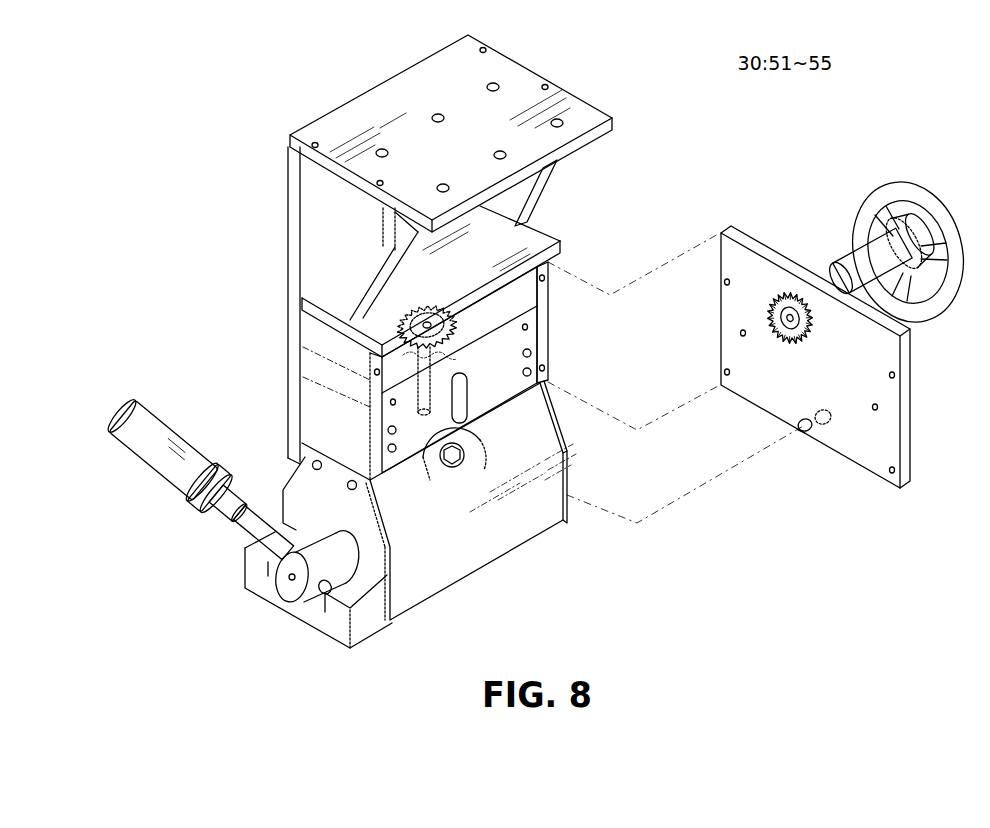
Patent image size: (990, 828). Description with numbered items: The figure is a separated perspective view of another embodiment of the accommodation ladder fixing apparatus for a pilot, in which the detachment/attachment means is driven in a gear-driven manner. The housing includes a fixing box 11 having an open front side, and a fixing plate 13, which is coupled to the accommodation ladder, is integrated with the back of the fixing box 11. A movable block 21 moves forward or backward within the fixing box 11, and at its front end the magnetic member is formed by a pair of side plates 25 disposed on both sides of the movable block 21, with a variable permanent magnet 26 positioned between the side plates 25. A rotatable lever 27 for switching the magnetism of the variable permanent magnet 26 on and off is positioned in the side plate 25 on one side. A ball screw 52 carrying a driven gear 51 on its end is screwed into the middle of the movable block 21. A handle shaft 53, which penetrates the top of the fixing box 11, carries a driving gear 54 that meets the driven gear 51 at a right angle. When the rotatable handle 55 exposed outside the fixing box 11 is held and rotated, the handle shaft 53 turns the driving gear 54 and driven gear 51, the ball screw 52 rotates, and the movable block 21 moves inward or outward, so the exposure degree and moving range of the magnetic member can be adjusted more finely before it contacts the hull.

The fixing box 11 is at (553, 240).
The fixing plate 13 is at (588, 112).
The movable block 21 is at (550, 352).
The side plates 25 is at (410, 610).
The variable permanent magnet 26 is at (487, 527).
The rotatable lever 27 is at (170, 470).
The driven gear 51 is at (452, 315).
The ball screw 52 is at (433, 350).
The handle shaft 53 is at (852, 262).
The driving gear 54 is at (790, 345).
The rotatable handle 55 is at (891, 184).